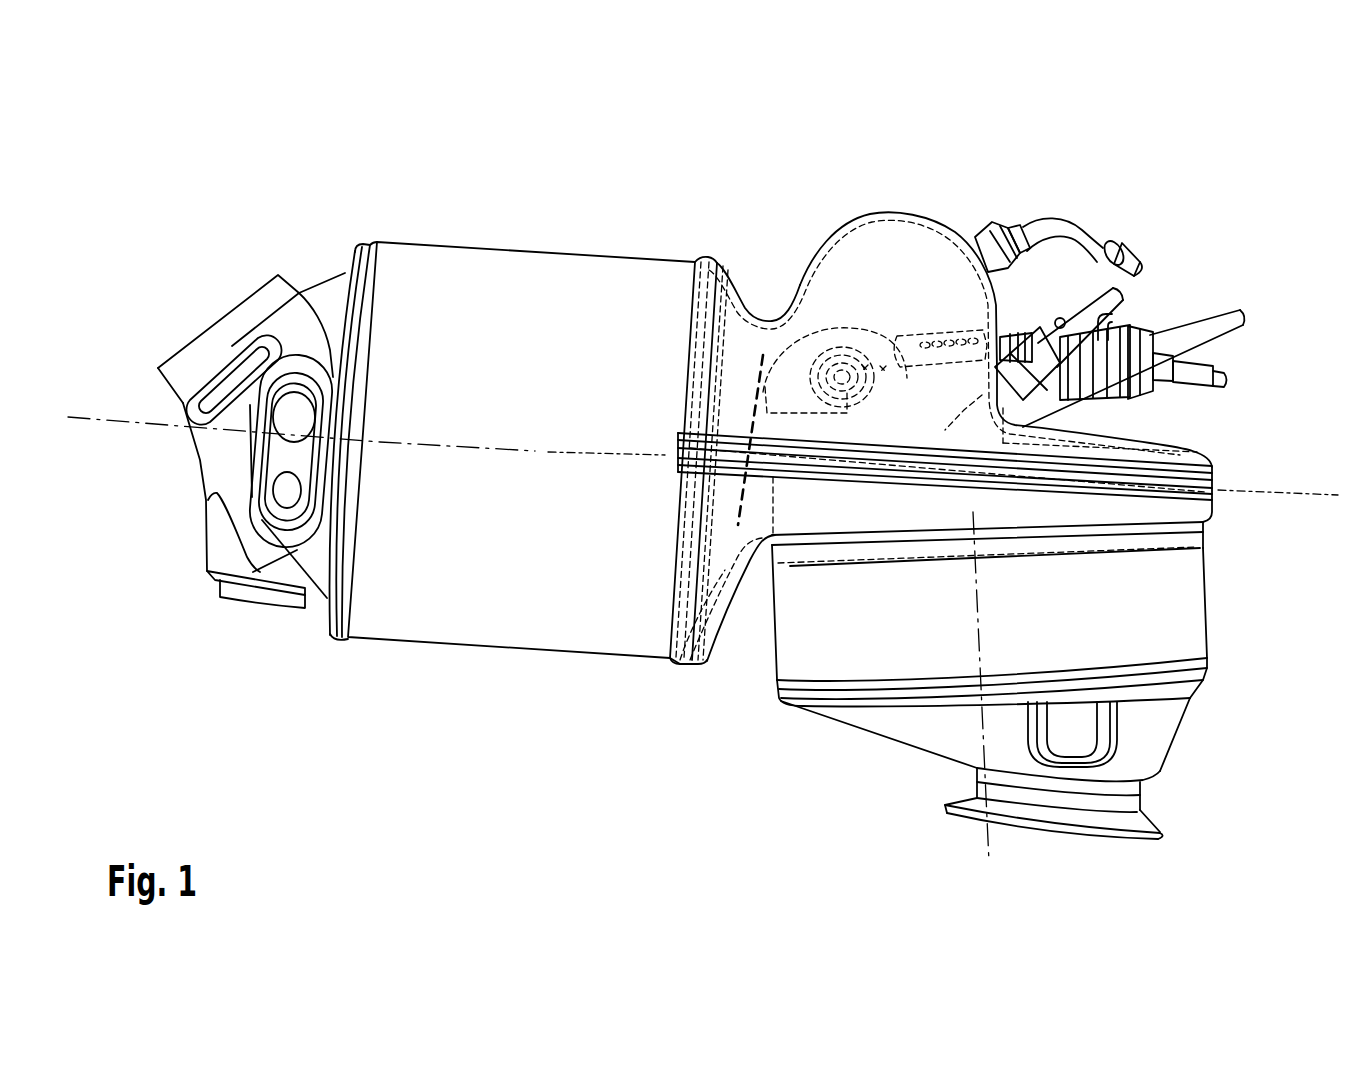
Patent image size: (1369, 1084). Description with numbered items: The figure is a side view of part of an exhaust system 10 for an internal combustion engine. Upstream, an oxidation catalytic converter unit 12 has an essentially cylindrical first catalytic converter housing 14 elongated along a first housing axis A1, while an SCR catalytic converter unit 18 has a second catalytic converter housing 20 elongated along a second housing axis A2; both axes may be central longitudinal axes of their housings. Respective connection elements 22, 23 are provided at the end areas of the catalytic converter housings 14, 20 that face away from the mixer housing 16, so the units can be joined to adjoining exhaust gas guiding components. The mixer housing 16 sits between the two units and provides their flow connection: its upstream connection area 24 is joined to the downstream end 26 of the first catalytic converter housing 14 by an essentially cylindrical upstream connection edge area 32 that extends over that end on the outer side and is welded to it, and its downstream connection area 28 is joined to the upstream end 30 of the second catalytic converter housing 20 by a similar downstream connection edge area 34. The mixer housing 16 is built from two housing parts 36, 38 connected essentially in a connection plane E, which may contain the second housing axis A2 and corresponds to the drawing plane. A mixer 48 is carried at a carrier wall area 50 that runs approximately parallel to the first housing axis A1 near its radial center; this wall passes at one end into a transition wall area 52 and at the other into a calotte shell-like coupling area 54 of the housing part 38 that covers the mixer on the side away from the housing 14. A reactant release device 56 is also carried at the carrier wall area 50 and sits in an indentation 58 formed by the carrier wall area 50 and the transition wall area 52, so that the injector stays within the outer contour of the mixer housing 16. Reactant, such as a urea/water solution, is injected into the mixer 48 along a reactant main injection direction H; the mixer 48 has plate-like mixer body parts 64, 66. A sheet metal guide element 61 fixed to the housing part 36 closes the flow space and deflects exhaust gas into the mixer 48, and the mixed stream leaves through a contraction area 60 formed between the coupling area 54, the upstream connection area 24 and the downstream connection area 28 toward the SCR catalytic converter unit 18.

The exhaust system 10 is at (1185, 172).
The oxidation catalytic converter unit 12 is at (1242, 632).
The first catalytic converter housing 14 is at (1205, 588).
The mixer housing 16 is at (1003, 213).
The SCR catalytic converter unit 18 is at (390, 218).
The second catalytic converter housing 20 is at (377, 641).
The connection element 22 is at (1175, 757).
The connection element 23 is at (193, 467).
The upstream connection area 24 is at (1230, 541).
The downstream end 26 is at (1205, 526).
The downstream connection area 28 is at (711, 245).
The upstream end 30 is at (663, 661).
The upstream connection edge area 32 is at (879, 558).
The downstream connection edge area 34 is at (678, 667).
The housing part 36 is at (707, 667).
The housing part 38 is at (822, 231).
The mixer 48 is at (968, 319).
The carrier wall area 50 is at (1247, 325).
The transition wall area 52 is at (1198, 462).
The coupling area 54 is at (882, 212).
The reactant release device 56 is at (1137, 327).
The indentation 58 is at (1182, 412).
The contraction area 60 is at (760, 278).
The guide element 61 is at (757, 413).
The first mixer body part 64 is at (848, 400).
The second mixer body part 66 is at (877, 330).
The reactant main injection direction H is at (930, 367).
The connection plane E is at (1333, 492).
The first housing axis A1 is at (982, 843).
The second housing axis A2 is at (76, 422).